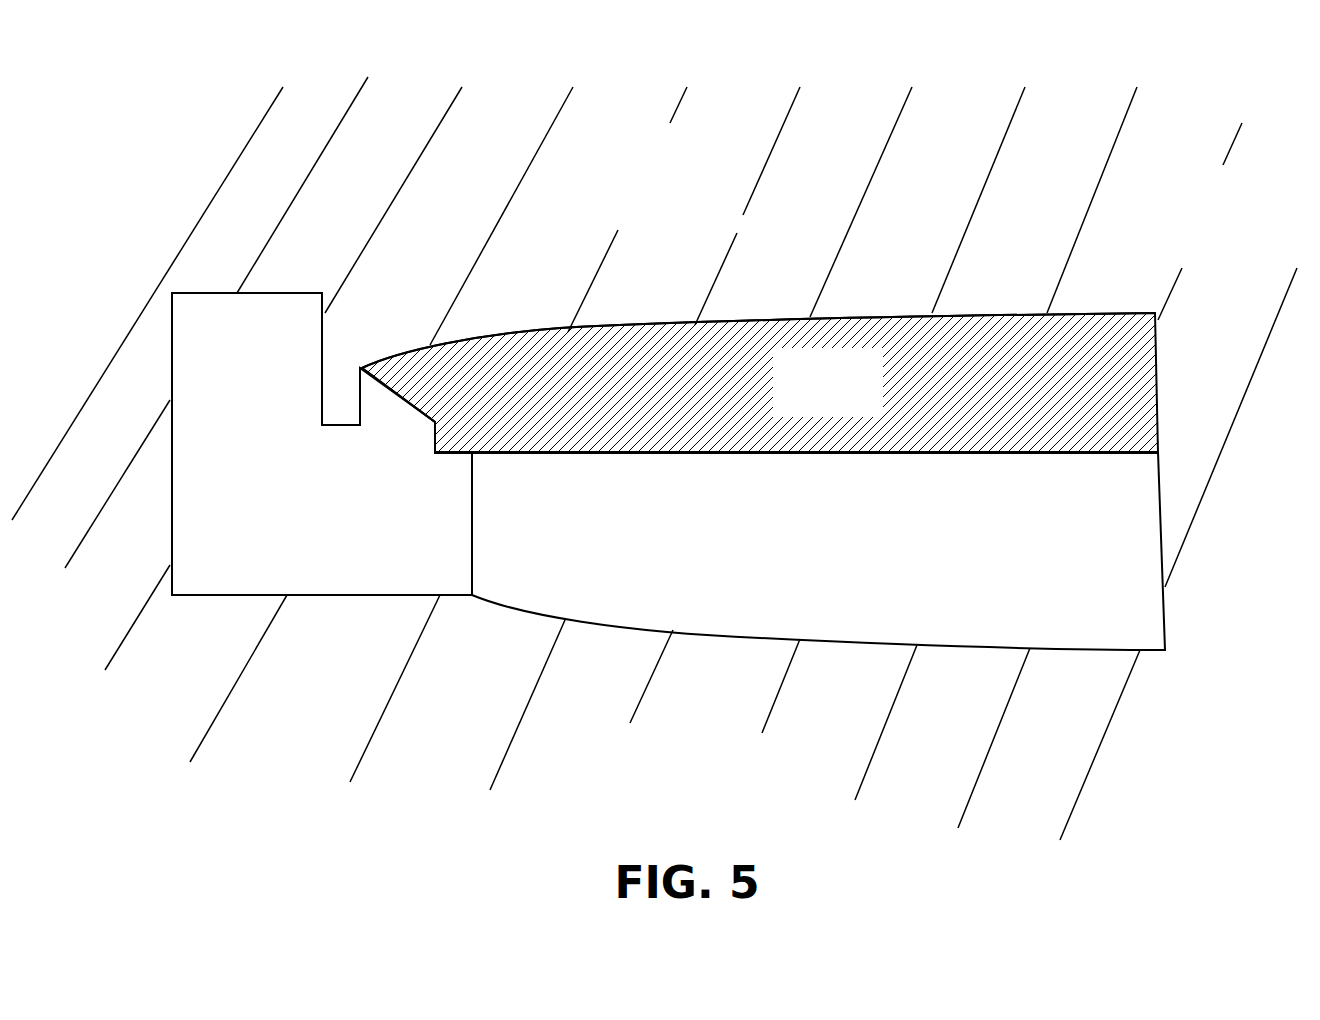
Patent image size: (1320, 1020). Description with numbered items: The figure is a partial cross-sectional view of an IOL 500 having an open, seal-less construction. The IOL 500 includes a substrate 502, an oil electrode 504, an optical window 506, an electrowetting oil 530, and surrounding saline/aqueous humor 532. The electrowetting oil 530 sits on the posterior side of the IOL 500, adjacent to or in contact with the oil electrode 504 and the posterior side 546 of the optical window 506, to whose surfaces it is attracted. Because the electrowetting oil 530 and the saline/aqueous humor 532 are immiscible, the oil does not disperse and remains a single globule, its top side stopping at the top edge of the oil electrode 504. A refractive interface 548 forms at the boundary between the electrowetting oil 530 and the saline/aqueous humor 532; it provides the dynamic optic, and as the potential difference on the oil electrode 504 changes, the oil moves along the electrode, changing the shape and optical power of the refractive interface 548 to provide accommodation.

The IOL 500 is at (740, 337).
The substrate 502 is at (210, 565).
The oil electrode 504 is at (375, 372).
The optical window 506 is at (869, 556).
The electrowetting oil 530 is at (845, 406).
The saline/aqueous humor 532 is at (666, 215).
The posterior side of the optical window 546 is at (1037, 468).
The refractive interface 548 is at (835, 274).